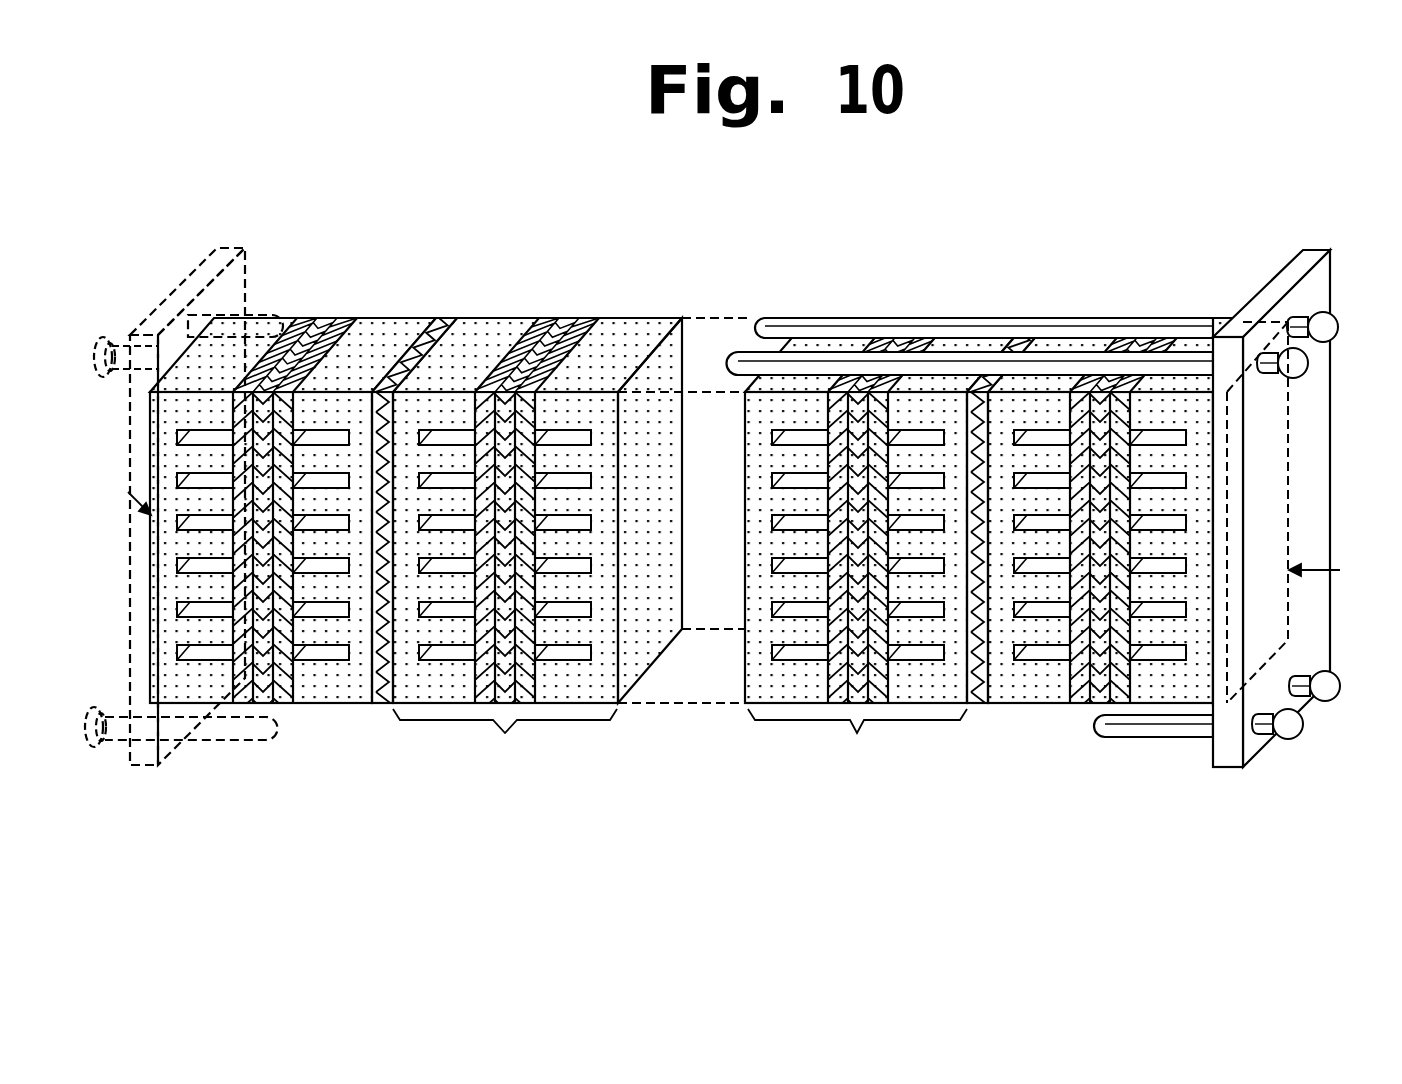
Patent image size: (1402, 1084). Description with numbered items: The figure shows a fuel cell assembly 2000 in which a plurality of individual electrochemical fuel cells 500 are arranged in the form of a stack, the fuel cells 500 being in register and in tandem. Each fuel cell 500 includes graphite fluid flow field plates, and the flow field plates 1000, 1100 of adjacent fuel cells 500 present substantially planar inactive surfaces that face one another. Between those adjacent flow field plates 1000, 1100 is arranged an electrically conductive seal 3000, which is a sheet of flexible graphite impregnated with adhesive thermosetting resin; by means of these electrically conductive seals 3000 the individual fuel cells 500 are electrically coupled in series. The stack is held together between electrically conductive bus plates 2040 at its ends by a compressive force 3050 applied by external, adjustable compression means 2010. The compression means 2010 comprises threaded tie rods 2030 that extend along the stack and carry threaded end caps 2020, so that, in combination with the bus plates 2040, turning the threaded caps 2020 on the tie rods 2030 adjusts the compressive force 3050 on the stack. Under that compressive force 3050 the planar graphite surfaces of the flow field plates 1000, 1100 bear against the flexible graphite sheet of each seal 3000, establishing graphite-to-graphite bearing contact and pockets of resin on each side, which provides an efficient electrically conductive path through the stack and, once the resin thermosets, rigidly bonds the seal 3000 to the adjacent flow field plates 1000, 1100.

The electrochemical fuel cell 500 is at (505, 733).
The flow field plate 1000 is at (403, 318).
The flow field plate 1100 is at (290, 318).
The assembly 2000 is at (736, 506).
The adjustable compression means 2010 is at (222, 248).
The threaded end cap 2020 is at (96, 337).
The threaded tie rod 2030 is at (232, 312).
The electrically conductive bus plate 2040 is at (1333, 458).
The electrically conductive seal 3000 is at (450, 318).
The compressive force 3050 is at (738, 531).